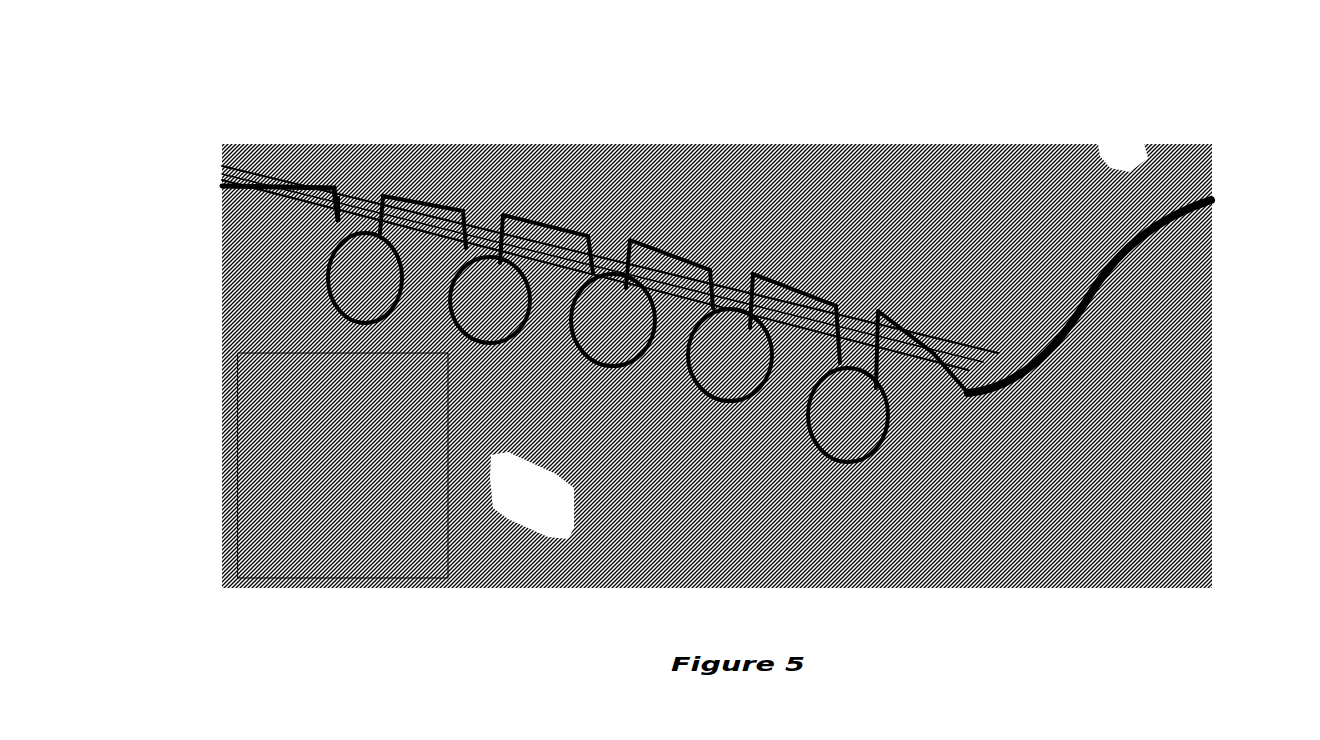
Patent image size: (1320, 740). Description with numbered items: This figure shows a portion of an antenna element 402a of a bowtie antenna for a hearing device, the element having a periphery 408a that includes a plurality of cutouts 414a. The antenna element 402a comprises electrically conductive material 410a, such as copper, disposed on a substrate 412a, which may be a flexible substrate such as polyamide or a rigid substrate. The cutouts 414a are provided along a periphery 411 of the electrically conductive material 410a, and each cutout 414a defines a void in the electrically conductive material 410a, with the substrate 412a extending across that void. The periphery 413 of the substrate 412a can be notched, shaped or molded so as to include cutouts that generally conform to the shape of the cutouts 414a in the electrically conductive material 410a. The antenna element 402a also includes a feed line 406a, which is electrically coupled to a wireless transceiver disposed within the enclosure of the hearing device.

The antenna element 402a is at (927, 167).
The feed line 406a is at (1203, 229).
The periphery 408a is at (775, 258).
The electrically conductive material 410a is at (272, 392).
The periphery of the electrically conductive material 411 is at (270, 178).
The substrate 412a is at (345, 192).
The periphery of the substrate 413 is at (532, 187).
The cutouts 414a is at (365, 318).